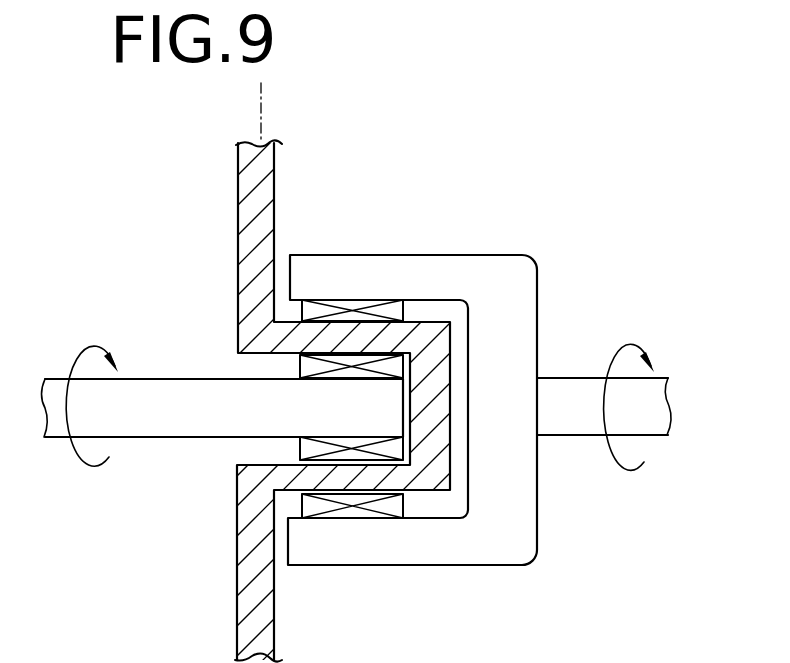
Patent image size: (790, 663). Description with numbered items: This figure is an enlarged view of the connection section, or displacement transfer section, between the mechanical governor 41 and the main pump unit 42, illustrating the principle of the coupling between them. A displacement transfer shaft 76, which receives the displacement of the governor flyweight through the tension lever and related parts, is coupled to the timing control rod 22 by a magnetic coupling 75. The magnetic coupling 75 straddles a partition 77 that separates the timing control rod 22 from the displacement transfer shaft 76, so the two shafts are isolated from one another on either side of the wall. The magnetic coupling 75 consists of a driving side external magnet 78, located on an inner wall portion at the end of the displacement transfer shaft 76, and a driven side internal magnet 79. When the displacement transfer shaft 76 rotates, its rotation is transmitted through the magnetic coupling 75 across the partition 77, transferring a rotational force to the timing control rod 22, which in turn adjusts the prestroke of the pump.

The timing control rod 22 is at (173, 423).
The mechanical governor 41 is at (278, 109).
The main pump unit 42 is at (240, 109).
The magnetic coupling 75 is at (557, 185).
The displacement transfer shaft 76 is at (572, 420).
The partition 77 is at (437, 368).
The driving side external magnet 78 is at (355, 307).
The driven side internal magnet 79 is at (390, 368).